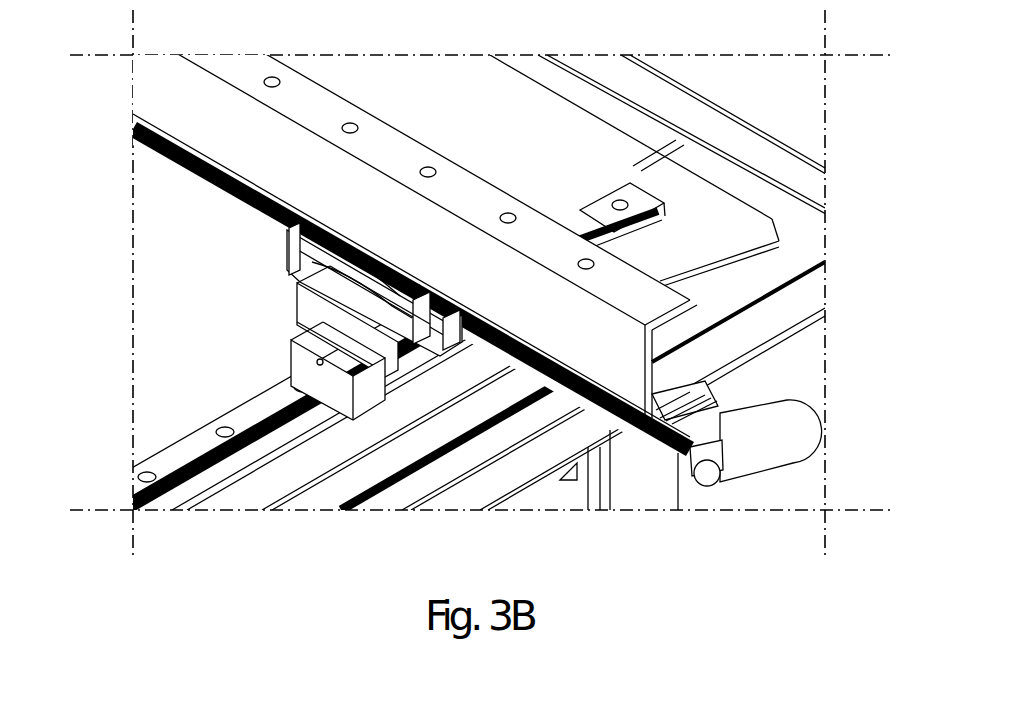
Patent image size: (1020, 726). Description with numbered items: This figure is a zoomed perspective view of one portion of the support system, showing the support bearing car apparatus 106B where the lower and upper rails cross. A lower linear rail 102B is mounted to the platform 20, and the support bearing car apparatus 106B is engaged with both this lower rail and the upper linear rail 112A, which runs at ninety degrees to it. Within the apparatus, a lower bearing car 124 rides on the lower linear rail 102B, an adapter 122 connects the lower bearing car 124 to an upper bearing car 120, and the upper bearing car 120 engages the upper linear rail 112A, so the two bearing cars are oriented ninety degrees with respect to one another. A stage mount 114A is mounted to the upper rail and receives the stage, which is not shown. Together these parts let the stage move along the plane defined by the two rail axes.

The platform 20 is at (720, 107).
The lower linear rail 102B is at (136, 480).
The support bearing car apparatus 106B is at (253, 321).
The upper linear rail 112A is at (748, 397).
The stage mount 114A is at (410, 143).
The upper bearing car 120 is at (298, 255).
The adapter 122 is at (293, 302).
The lower bearing car 124 is at (290, 359).